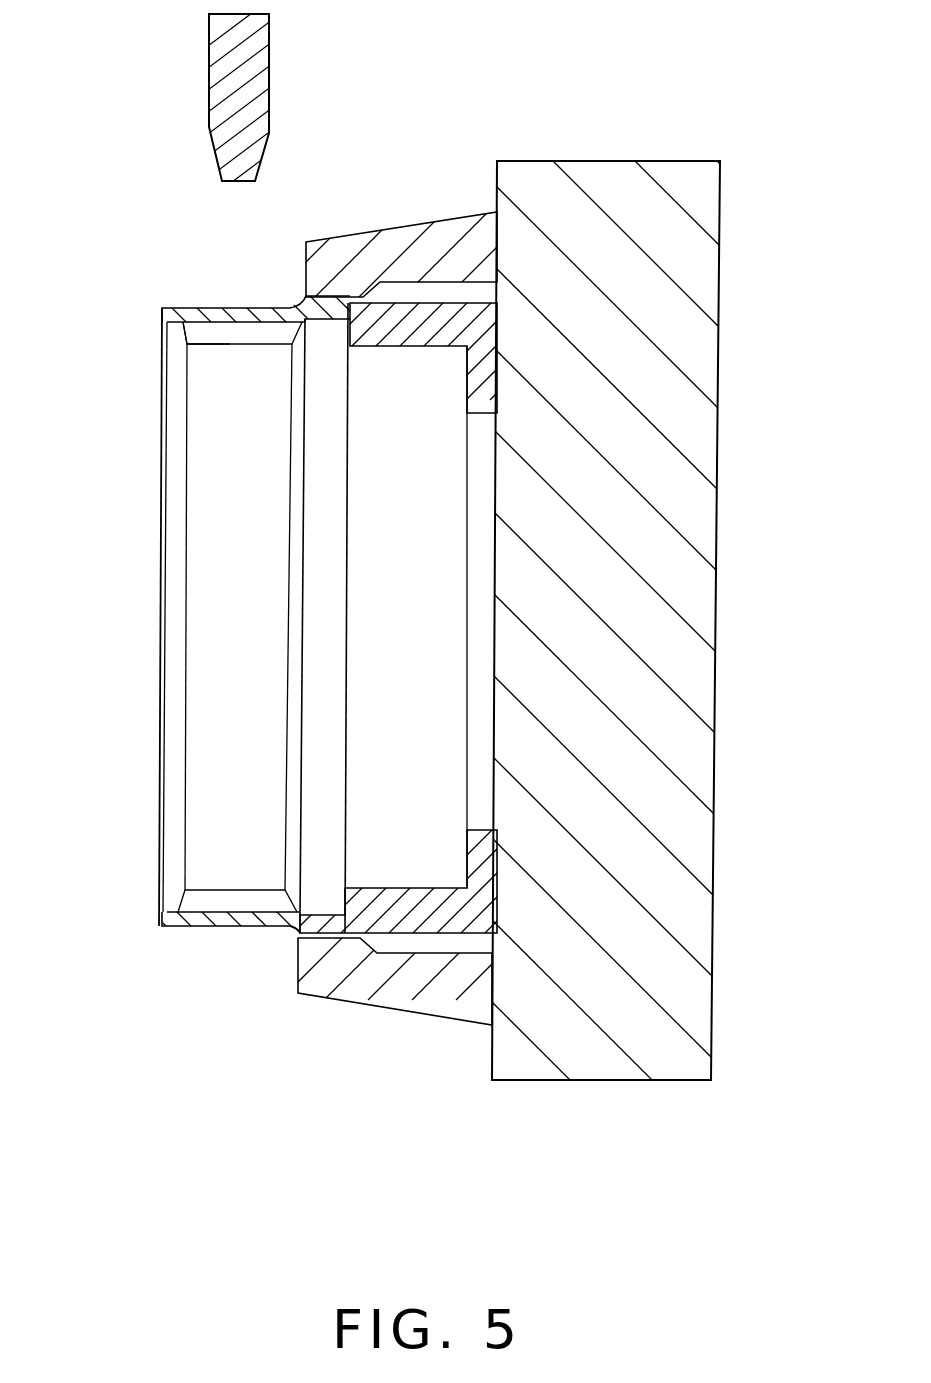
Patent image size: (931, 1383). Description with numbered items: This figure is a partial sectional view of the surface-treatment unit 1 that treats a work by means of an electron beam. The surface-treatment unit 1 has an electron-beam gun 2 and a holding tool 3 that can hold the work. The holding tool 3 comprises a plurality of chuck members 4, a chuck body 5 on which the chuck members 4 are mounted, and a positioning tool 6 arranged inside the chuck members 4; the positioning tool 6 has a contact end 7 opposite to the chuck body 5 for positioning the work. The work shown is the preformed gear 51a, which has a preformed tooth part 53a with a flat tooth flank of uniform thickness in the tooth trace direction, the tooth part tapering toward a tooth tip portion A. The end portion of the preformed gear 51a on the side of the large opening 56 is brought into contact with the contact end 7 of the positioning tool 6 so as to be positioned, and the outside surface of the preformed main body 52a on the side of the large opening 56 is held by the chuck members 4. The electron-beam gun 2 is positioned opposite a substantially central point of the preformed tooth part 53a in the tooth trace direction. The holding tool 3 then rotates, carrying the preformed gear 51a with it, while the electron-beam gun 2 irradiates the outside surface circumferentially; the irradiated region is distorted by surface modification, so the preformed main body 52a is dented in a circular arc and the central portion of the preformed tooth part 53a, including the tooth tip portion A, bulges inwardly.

The surface-treatment unit 1 is at (680, 132).
The electron-beam gun 2 is at (268, 48).
The holding tool 3 is at (652, 1112).
The chuck members 4 is at (363, 233).
The chuck body 5 is at (693, 590).
The positioning tool 6 is at (395, 302).
The contact end 7 is at (297, 925).
The preformed gear 51a is at (158, 965).
The preformed main body 52a is at (238, 308).
The preformed tooth part 53a is at (203, 888).
The large opening 56 is at (320, 668).
The tooth tip portion A is at (220, 345).